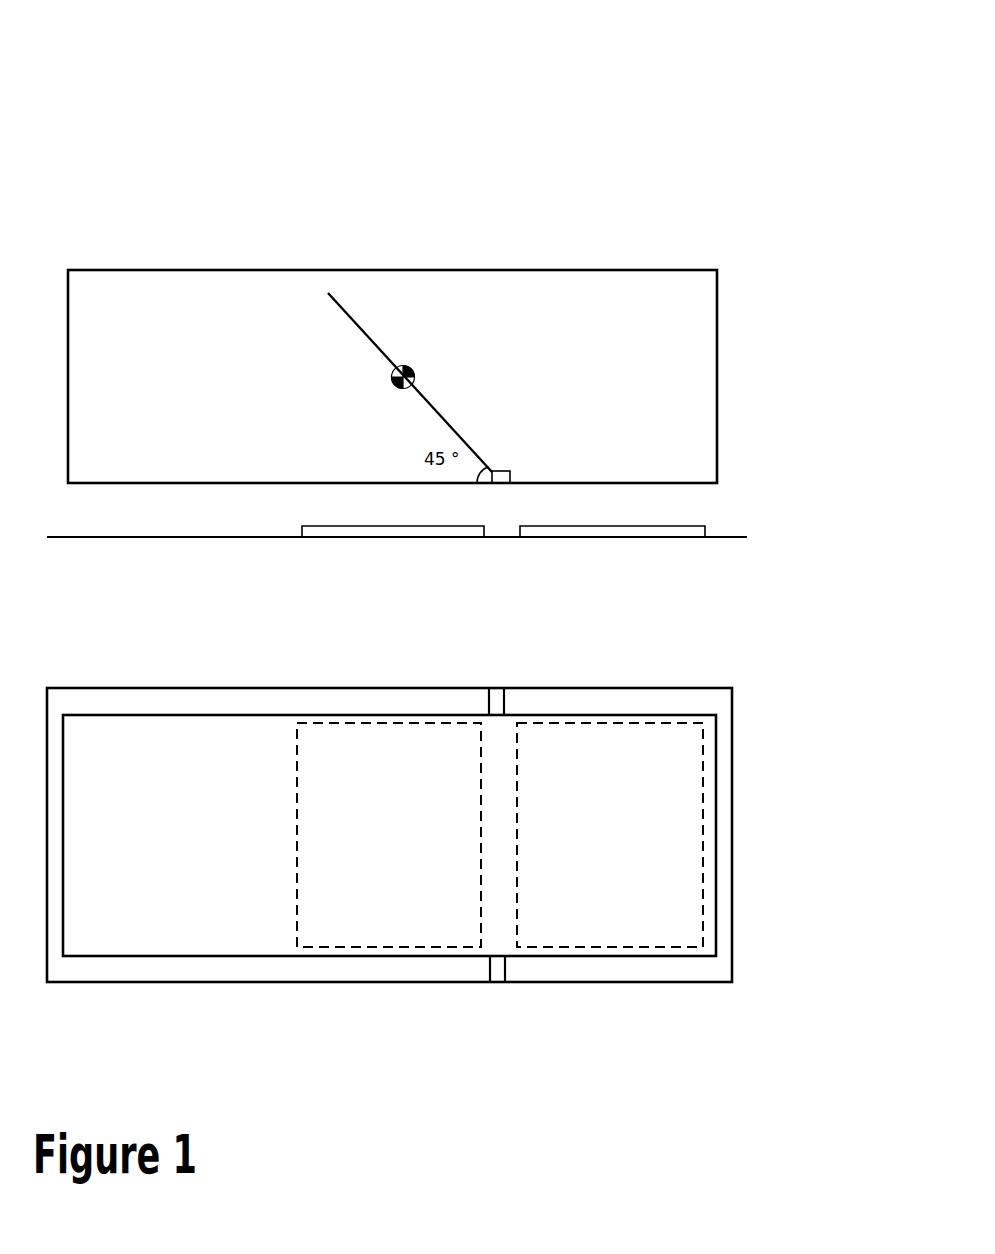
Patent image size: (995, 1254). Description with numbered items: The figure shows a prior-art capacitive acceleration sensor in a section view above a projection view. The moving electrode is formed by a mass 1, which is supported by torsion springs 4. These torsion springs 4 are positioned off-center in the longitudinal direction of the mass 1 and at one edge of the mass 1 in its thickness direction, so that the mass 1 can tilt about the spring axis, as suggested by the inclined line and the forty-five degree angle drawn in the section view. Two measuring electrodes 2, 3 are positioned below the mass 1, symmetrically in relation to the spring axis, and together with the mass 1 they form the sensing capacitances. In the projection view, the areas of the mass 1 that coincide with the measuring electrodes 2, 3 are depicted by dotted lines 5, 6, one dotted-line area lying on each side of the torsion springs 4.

The mass 1 is at (456, 603).
The measuring electrode 2 is at (456, 554).
The measuring electrode 3 is at (623, 525).
The torsion spring 4 is at (513, 477).
The first sensing region 5 is at (581, 813).
The second sensing region 6 is at (703, 840).